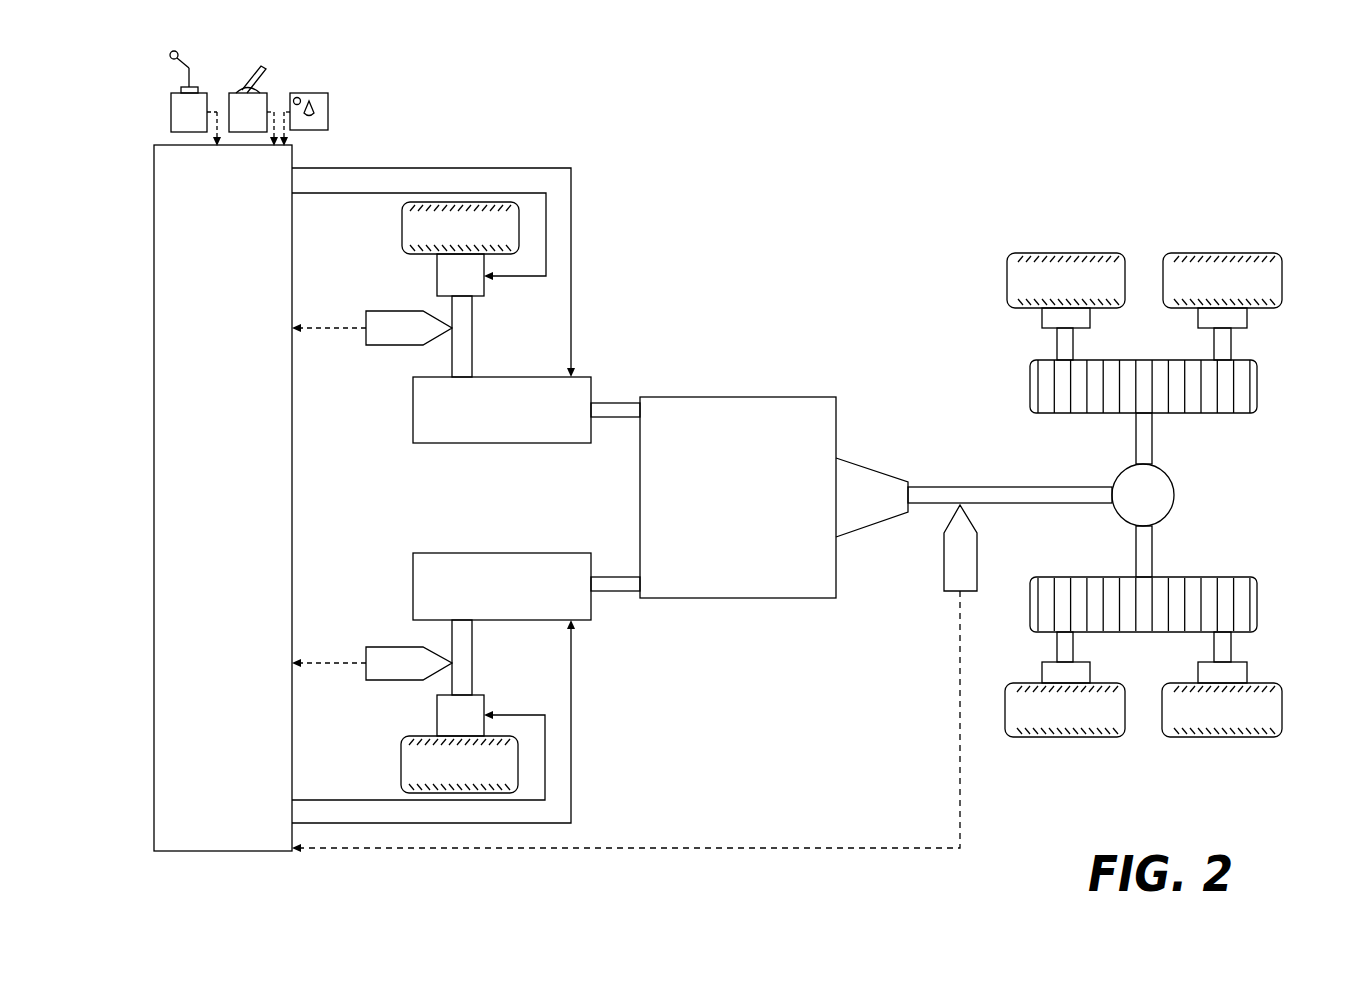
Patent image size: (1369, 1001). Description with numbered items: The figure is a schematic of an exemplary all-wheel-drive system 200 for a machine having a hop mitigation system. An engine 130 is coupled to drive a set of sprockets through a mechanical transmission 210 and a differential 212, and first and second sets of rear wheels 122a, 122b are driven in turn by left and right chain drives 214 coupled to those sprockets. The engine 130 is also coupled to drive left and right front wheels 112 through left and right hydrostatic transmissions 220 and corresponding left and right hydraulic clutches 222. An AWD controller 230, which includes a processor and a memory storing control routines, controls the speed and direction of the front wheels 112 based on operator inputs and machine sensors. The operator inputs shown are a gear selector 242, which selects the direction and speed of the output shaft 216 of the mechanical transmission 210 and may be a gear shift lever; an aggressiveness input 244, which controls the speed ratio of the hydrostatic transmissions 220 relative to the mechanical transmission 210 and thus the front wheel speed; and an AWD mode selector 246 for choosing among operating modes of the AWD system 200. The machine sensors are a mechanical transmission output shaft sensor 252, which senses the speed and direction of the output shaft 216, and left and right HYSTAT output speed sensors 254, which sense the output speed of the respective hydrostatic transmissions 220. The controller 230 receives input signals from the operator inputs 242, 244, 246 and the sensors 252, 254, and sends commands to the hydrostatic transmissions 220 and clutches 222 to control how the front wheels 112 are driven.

The front wheels 112 is at (402, 225).
The first set of rear wheels 122a is at (1100, 253).
The second set of rear wheels 122b is at (1272, 253).
The engine 130 is at (738, 497).
The AWD system 200 is at (773, 692).
The mechanical transmission 210 is at (872, 497).
The differential 212 is at (1143, 495).
The chain drives 214 is at (1248, 413).
The output shaft 216 is at (968, 487).
The hydrostatic transmissions 220 is at (466, 495).
The hydraulic clutches 222 is at (437, 276).
The AWD controller 230 is at (223, 498).
The gear selector 242 is at (205, 64).
The aggressiveness input 244 is at (263, 67).
The AWD mode selector 246 is at (328, 120).
The mechanical transmission output shaft sensor 252 is at (944, 580).
The HYSTAT output speed sensors 254 is at (366, 345).